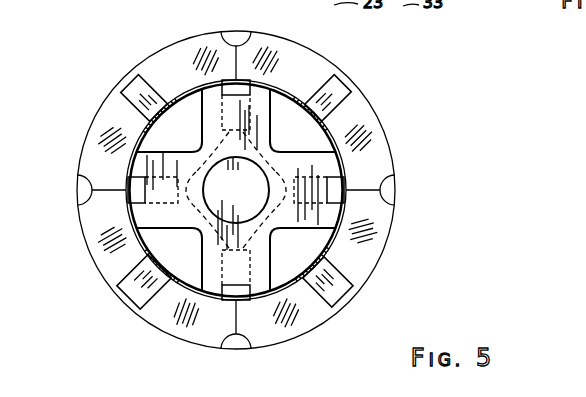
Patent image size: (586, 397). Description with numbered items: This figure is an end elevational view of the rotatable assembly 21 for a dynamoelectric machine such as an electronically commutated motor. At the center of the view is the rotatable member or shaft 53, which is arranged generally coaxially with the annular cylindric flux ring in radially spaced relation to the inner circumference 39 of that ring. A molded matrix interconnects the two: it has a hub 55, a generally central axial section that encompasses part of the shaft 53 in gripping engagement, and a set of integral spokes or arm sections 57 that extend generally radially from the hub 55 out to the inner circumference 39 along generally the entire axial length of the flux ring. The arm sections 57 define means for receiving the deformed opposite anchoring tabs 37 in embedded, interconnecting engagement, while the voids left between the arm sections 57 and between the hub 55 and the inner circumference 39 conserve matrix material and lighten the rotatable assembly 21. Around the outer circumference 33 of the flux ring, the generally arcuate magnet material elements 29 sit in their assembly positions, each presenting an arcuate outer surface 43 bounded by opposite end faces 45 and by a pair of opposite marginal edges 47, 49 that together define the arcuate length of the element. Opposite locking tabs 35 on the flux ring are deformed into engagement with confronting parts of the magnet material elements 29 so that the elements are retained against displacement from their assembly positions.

The rotatable assembly 21 is at (370, 287).
The magnet material elements 29 is at (108, 92).
The outer circumference 33 is at (168, 45).
The locking tabs 35 is at (131, 77).
The anchoring tabs 37 is at (190, 186).
The inner circumference 39 is at (320, 238).
The arcuate outer surface 43 is at (194, 37).
The end faces 45 is at (107, 125).
The marginal edge 47 is at (79, 210).
The marginal edge 49 is at (80, 178).
The shaft 53 is at (225, 200).
The hub 55 is at (170, 120).
The arm sections 57 is at (302, 150).